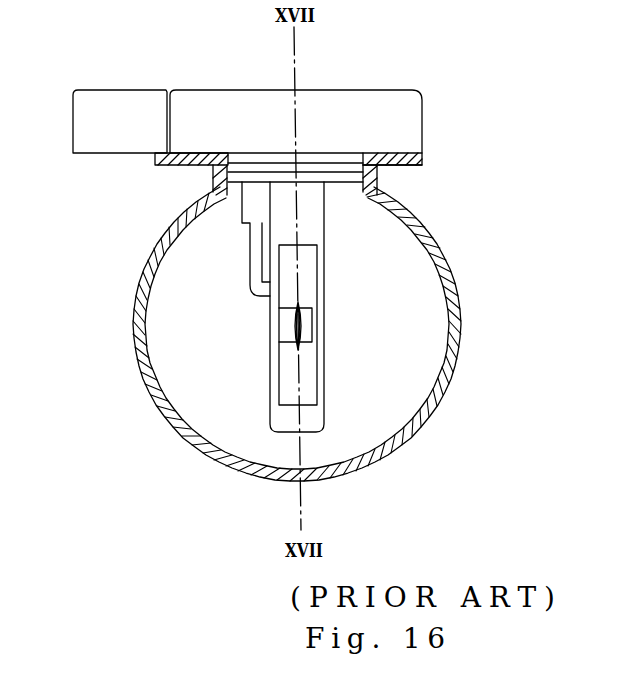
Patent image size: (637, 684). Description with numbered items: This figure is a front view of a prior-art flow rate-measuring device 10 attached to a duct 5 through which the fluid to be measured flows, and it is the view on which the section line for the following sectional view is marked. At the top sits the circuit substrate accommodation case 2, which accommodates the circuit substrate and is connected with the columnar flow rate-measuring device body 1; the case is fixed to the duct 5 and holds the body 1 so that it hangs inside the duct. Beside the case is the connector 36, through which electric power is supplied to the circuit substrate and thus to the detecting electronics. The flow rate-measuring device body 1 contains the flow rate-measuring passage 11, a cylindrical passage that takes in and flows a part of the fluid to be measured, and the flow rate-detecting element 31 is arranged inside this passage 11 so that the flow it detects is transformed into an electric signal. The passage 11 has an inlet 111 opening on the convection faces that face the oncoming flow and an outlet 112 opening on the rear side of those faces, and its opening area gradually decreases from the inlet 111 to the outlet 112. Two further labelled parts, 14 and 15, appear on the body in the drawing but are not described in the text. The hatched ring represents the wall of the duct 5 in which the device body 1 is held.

The flow rate-measuring device body 1 is at (317, 360).
The circuit substrate accommodation case 2 is at (345, 115).
The duct 5 is at (373, 457).
The flow rate-measuring device 10 is at (281, 128).
The flow rate-measuring passage 11 is at (303, 268).
The holder 14 is at (287, 225).
The holder bottom 15 is at (310, 423).
The flow rate-detecting element 31 is at (303, 332).
The connector 36 is at (108, 135).
The inlet 111 is at (302, 383).
The outlet 112 is at (307, 318).